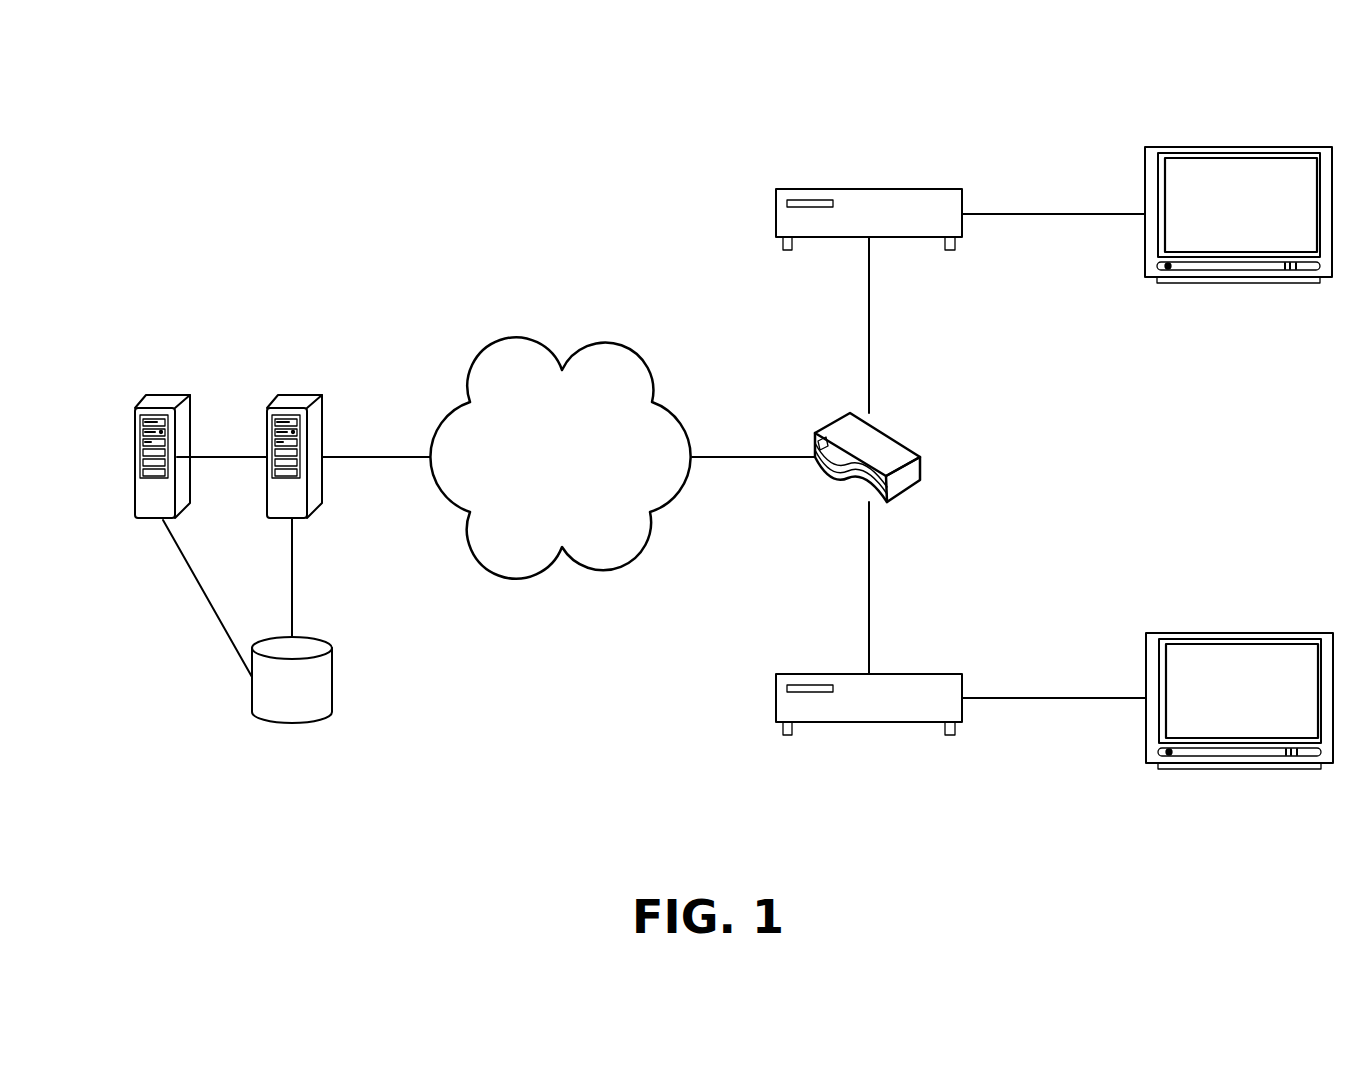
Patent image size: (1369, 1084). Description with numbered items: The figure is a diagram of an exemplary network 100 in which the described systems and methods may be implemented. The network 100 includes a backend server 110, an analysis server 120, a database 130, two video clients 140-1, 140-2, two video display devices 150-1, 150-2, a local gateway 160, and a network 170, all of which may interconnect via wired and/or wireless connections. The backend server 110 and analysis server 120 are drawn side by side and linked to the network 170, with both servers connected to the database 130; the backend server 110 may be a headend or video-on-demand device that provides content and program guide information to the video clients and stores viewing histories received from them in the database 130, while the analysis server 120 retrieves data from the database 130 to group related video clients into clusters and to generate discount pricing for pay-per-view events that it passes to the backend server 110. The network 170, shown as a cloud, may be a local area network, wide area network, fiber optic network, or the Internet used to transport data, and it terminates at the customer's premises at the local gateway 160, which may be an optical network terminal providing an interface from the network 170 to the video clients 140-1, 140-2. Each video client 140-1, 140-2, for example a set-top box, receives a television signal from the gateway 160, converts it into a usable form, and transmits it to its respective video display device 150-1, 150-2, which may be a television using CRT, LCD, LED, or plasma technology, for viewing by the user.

The network 100 is at (280, 110).
The backend server 110 is at (279, 396).
The analysis server 120 is at (148, 396).
The database 130 is at (333, 644).
The video client 140-1 is at (812, 189).
The video client 140-2 is at (812, 674).
The video display device 150-1 is at (1145, 161).
The video display device 150-2 is at (1146, 646).
The local gateway 160 is at (893, 437).
The network 170 is at (541, 485).